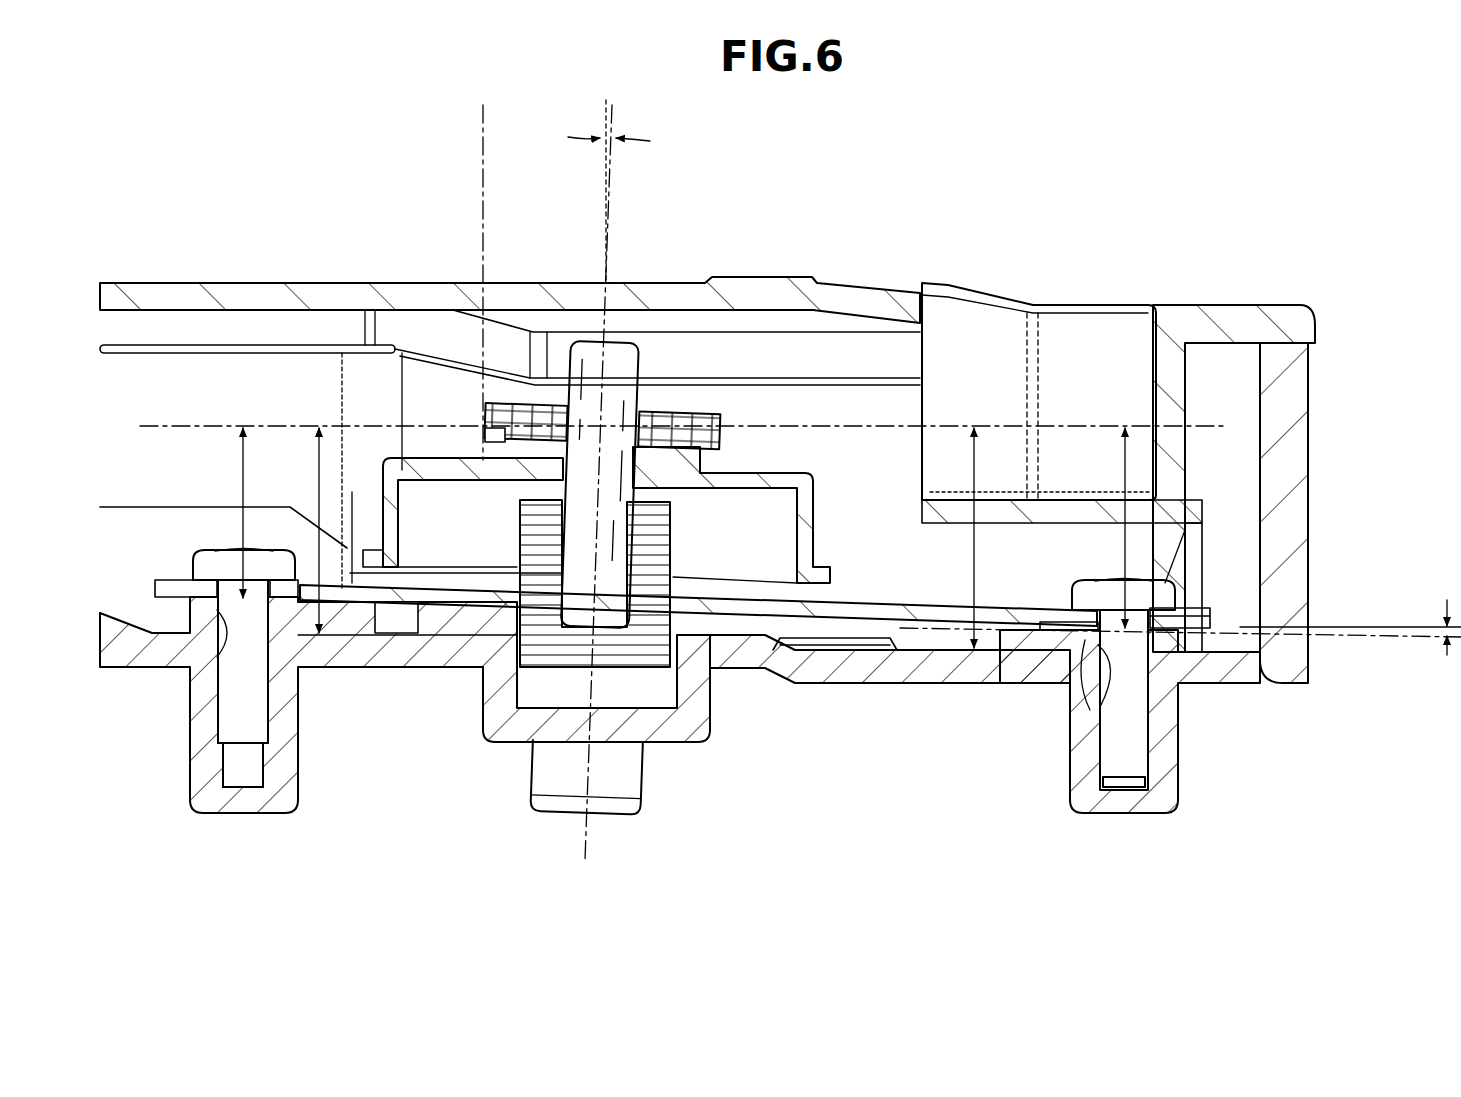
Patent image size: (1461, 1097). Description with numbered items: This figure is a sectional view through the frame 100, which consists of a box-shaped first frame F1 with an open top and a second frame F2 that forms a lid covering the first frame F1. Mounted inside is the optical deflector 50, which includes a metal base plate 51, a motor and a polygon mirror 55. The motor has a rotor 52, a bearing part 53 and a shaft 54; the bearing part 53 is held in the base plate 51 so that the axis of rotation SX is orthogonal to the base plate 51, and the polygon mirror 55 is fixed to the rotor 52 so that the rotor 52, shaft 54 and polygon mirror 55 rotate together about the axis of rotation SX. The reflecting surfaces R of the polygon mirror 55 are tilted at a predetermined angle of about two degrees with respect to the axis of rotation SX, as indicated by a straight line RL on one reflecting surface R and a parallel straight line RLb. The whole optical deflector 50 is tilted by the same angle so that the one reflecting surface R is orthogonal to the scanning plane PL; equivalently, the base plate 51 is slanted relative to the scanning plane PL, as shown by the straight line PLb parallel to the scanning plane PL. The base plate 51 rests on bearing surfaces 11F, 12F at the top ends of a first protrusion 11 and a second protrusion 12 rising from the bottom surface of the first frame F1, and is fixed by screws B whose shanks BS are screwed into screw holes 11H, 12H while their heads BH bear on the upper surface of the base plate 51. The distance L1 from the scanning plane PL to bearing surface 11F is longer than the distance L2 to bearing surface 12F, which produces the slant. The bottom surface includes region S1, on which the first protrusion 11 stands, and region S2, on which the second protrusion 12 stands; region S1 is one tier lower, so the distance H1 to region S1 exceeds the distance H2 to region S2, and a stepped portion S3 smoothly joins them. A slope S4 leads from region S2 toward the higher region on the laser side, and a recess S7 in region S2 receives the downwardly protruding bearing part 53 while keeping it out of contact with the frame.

The frame 100 is at (1259, 443).
The first frame F1 is at (1312, 370).
The second frame F2 is at (1240, 312).
The optical deflector 50 is at (783, 400).
The base plate 51 is at (755, 607).
The rotor 52 is at (812, 528).
The bearing part 53 is at (540, 534).
The shaft 54 is at (586, 340).
The polygon mirror 55 is at (575, 347).
The first protrusion 11 is at (1013, 668).
The second protrusion 12 is at (405, 672).
The bearing surface 11F is at (1057, 625).
The screw hole 11H is at (1092, 650).
The bearing surface 12F is at (208, 592).
The screw hole 12H is at (215, 640).
The screw B is at (705, 647).
The head BH is at (232, 552).
The shank BS is at (258, 676).
The region S1 is at (990, 655).
The region S2 is at (447, 650).
The stepped portion S3 is at (858, 652).
The slope S4 is at (150, 622).
The recess S7 is at (668, 700).
The reflecting surface R is at (485, 437).
The straight line RL is at (483, 182).
The straight line RLb is at (604, 112).
The axis of rotation SX is at (612, 166).
The scanning plane PL is at (662, 430).
The straight line PLb is at (1390, 628).
The distance L1 is at (1144, 528).
The distance L2 is at (226, 513).
The distance H1 is at (996, 538).
The distance H2 is at (300, 530).